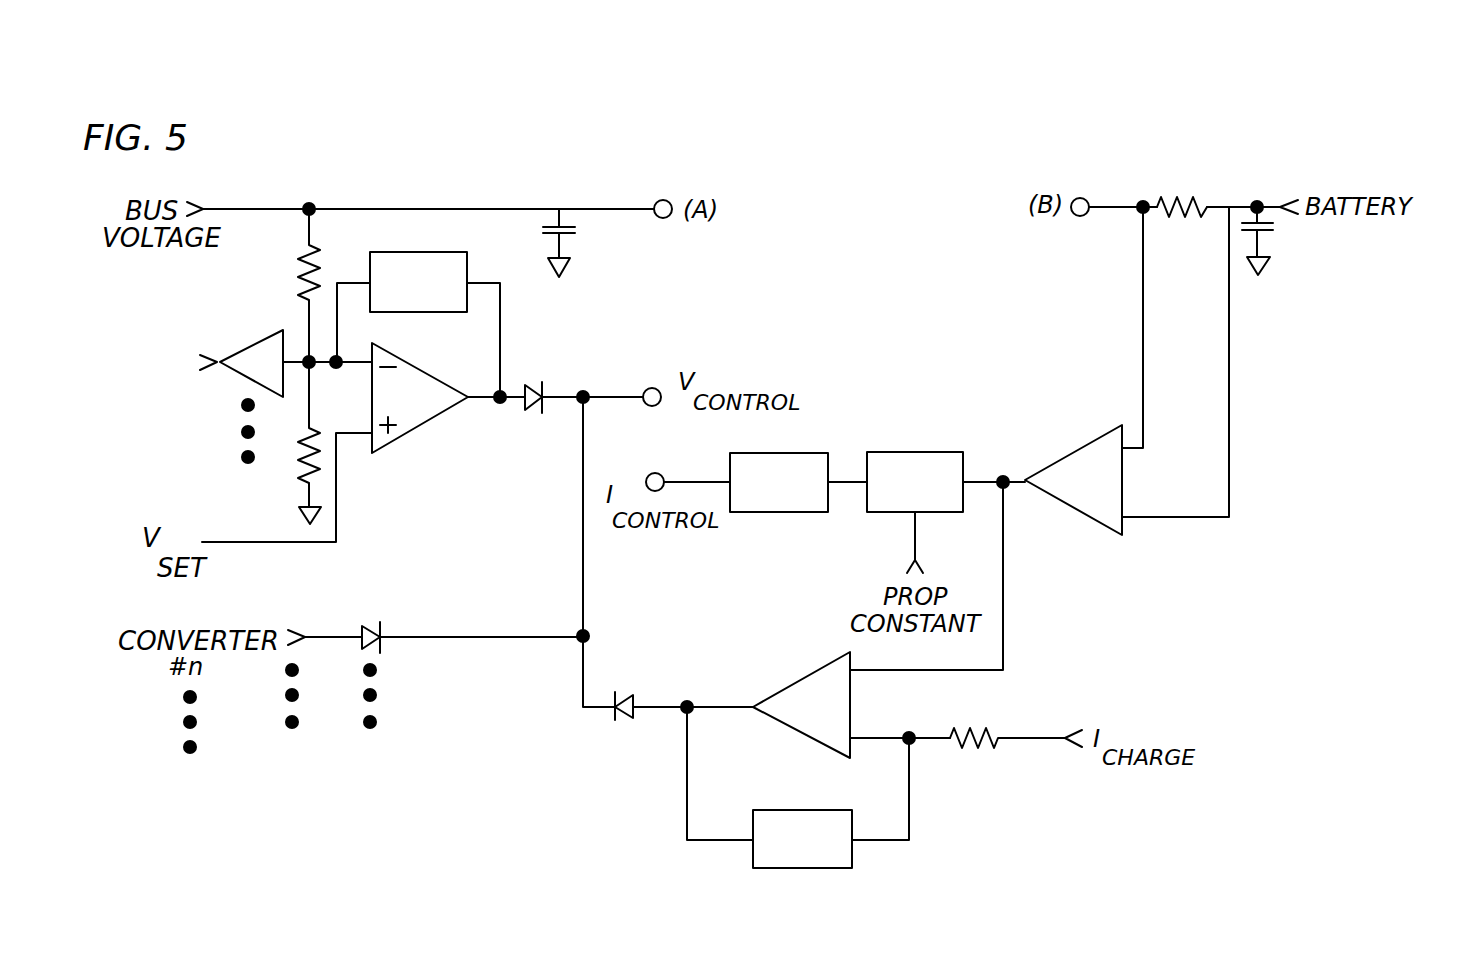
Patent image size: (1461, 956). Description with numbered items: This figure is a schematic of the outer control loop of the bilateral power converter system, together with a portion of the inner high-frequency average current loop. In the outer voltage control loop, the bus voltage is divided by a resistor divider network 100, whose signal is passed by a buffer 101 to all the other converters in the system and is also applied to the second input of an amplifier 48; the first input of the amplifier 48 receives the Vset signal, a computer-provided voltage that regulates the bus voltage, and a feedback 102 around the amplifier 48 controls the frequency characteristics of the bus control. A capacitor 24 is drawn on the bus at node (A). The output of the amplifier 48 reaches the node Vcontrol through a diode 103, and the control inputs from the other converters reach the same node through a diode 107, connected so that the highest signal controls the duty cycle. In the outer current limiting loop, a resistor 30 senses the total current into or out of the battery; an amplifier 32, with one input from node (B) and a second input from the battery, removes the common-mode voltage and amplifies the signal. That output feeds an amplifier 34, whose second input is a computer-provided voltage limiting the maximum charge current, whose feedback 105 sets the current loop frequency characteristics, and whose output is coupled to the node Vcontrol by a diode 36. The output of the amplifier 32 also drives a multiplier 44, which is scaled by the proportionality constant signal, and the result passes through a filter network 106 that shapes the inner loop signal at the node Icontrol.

The resistor divider network 100 is at (325, 253).
The buffer 101 is at (258, 343).
The feedback 102 is at (398, 313).
The diode 103 is at (533, 383).
The amplifier 48 is at (404, 436).
The bus capacitor 24 is at (577, 232).
The resistor 30 is at (1181, 196).
The amplifier 32 is at (1093, 441).
The multiplier 44 is at (935, 513).
The filter network 106 is at (780, 513).
The diode 107 is at (367, 623).
The diode 36 is at (628, 695).
The amplifier 34 is at (808, 676).
The feedback 105 is at (800, 869).